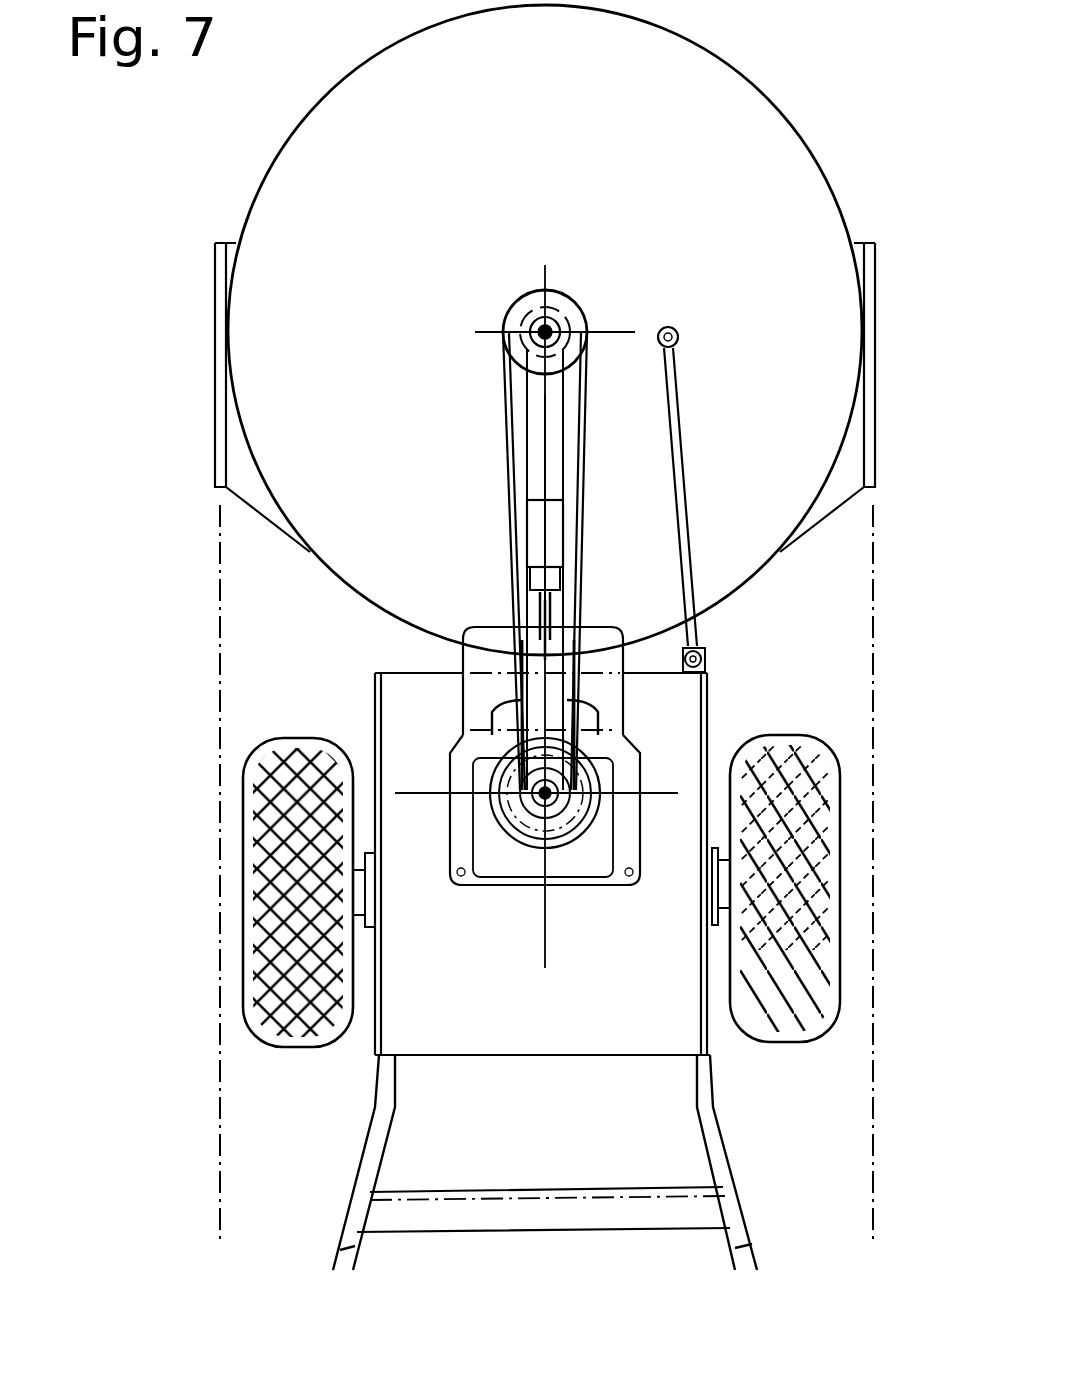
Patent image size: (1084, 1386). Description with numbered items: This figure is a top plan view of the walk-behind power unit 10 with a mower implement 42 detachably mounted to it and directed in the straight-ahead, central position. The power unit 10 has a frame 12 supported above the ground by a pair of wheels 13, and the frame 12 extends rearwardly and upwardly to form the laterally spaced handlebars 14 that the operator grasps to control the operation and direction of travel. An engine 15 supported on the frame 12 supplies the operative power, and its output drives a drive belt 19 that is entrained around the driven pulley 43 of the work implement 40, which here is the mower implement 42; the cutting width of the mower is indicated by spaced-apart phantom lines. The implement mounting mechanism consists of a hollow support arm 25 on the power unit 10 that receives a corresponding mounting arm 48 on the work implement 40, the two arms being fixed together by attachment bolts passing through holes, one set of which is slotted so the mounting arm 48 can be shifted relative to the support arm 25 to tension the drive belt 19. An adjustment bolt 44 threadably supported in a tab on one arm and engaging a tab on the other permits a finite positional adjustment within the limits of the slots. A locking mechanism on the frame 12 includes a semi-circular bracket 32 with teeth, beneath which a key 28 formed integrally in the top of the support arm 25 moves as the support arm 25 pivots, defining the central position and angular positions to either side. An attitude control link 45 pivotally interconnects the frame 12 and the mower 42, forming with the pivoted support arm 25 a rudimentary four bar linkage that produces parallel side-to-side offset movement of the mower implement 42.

The walk-behind power unit 10 is at (345, 1103).
The frame 12 is at (712, 1053).
The wheels 13 is at (775, 737).
The handlebars 14 is at (378, 1185).
The engine 15 is at (558, 847).
The drive belt 19 is at (587, 457).
The support arm 25 is at (523, 653).
The key 28 is at (595, 692).
The semi-circular bracket 32 is at (593, 707).
The work implement 40 is at (240, 168).
The mower implement 42 is at (774, 105).
The driven pulley 43 is at (519, 302).
The adjustment bolt 44 is at (523, 600).
The attitude control link 45 is at (680, 440).
The mounting arm 48 is at (527, 402).